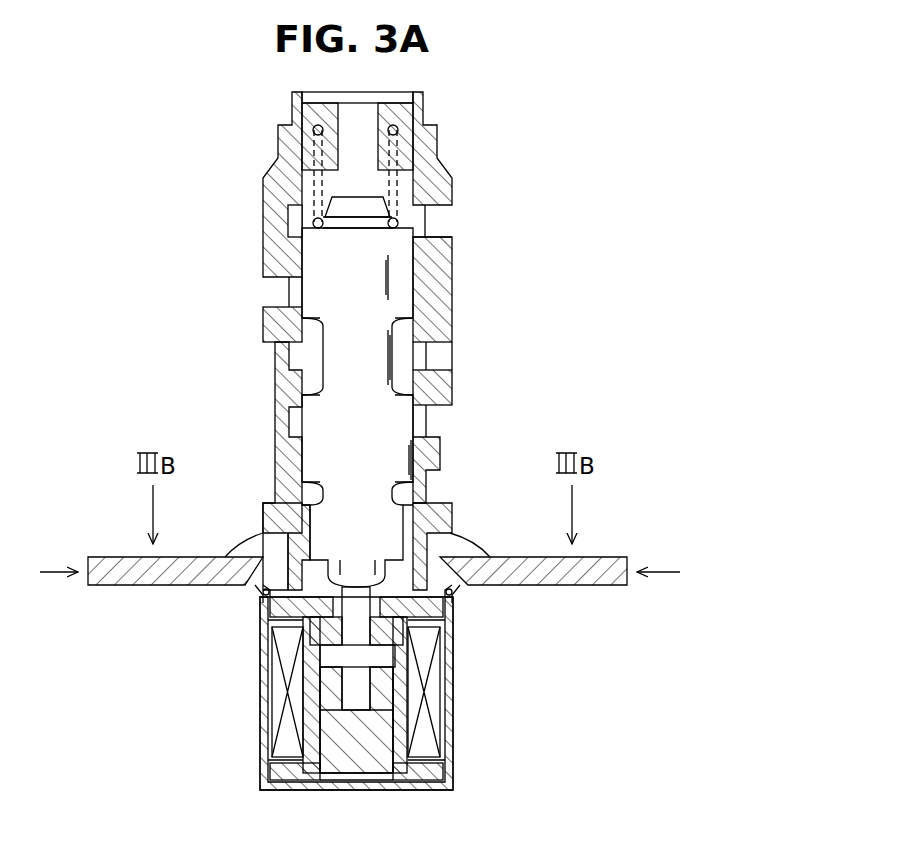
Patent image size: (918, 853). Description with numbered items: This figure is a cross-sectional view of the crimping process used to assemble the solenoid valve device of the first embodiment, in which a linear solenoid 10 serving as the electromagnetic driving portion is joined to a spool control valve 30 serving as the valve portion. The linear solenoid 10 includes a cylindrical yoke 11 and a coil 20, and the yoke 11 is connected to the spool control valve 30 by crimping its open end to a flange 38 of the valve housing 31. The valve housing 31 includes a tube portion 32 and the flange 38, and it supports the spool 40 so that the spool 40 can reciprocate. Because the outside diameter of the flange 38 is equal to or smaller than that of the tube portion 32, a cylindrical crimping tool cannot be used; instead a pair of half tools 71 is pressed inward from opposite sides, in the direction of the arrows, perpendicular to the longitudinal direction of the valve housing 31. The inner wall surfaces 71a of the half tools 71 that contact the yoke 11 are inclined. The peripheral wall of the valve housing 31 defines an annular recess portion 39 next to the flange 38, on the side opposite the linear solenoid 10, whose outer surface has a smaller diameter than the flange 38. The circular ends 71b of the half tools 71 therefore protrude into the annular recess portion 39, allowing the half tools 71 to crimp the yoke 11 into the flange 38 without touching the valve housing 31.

The linear solenoid 10 is at (463, 256).
The yoke 11 is at (448, 727).
The coil 20 is at (275, 677).
The spool control valve 30 is at (463, 382).
The valve housing 31 is at (263, 318).
The tube portion 32 is at (443, 310).
The flange 38 is at (447, 648).
The annular recess portion 39 is at (442, 556).
The spool 40 is at (296, 420).
The half tools 71 is at (120, 557).
The inner wall surfaces 71a is at (262, 601).
The circular ends 71b is at (265, 553).